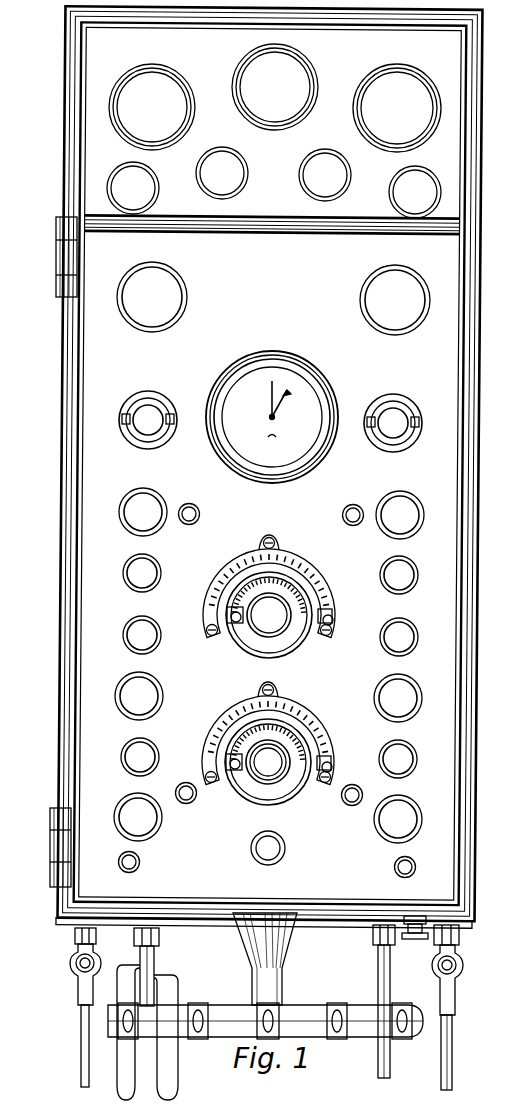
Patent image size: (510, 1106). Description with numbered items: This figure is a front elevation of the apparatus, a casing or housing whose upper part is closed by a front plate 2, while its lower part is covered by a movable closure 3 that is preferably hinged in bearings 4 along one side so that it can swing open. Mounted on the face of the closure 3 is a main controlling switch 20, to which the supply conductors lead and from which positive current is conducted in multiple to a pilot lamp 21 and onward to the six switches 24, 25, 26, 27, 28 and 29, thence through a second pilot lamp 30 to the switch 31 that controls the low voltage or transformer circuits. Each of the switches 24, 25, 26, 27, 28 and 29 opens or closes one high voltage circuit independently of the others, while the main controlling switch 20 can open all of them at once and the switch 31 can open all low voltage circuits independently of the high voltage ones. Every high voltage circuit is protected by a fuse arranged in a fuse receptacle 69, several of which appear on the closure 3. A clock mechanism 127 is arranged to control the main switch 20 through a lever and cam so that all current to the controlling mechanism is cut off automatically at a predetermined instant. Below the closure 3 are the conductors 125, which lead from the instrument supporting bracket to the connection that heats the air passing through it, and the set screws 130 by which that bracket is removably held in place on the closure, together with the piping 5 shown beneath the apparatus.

The front plate 2 is at (274, 131).
The movable closure 3 is at (267, 679).
The bearings 4 is at (58, 223).
The supply pipe with valve 5 is at (448, 1022).
The main controlling switch 20 is at (147, 425).
The pilot lamp 21 is at (152, 297).
The switch 24 is at (156, 573).
The switch 25 is at (150, 637).
The switch 26 is at (148, 756).
The switch 27 is at (408, 759).
The switch 28 is at (408, 637).
The switch 29 is at (410, 576).
The pilot lamp 30 is at (395, 300).
The switch 31 is at (394, 420).
The fuse receptacle 69 is at (160, 527).
The conductors 125 is at (190, 1006).
The clock mechanism 127 is at (312, 380).
The set screws 130 is at (305, 918).